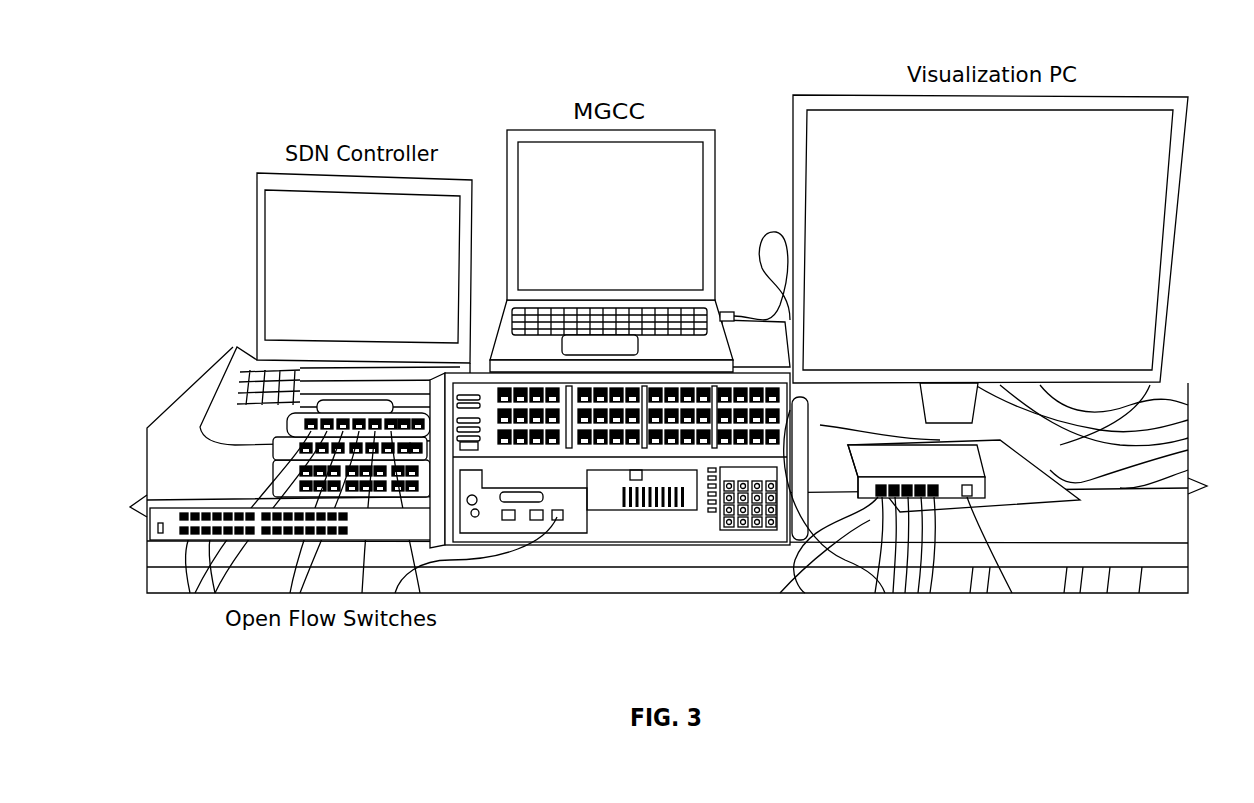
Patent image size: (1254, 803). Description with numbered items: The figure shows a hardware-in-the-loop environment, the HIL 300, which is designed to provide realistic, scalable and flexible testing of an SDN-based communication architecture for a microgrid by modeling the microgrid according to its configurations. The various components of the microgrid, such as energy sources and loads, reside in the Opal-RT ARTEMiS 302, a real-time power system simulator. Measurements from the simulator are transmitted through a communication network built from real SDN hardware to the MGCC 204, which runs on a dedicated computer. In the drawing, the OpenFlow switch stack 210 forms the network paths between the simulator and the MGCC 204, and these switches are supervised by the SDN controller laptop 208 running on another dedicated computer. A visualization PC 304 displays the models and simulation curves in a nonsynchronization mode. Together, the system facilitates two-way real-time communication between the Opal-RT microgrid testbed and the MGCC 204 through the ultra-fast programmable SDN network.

The HIL 300 is at (1107, 59).
The MGCC 204 is at (573, 197).
The SDN controller laptop 208 is at (277, 218).
The OpenFlow switch stack 210 is at (290, 462).
The Opal-RT ARTEMiS 302 is at (605, 545).
The visualization PC 304 is at (1118, 298).